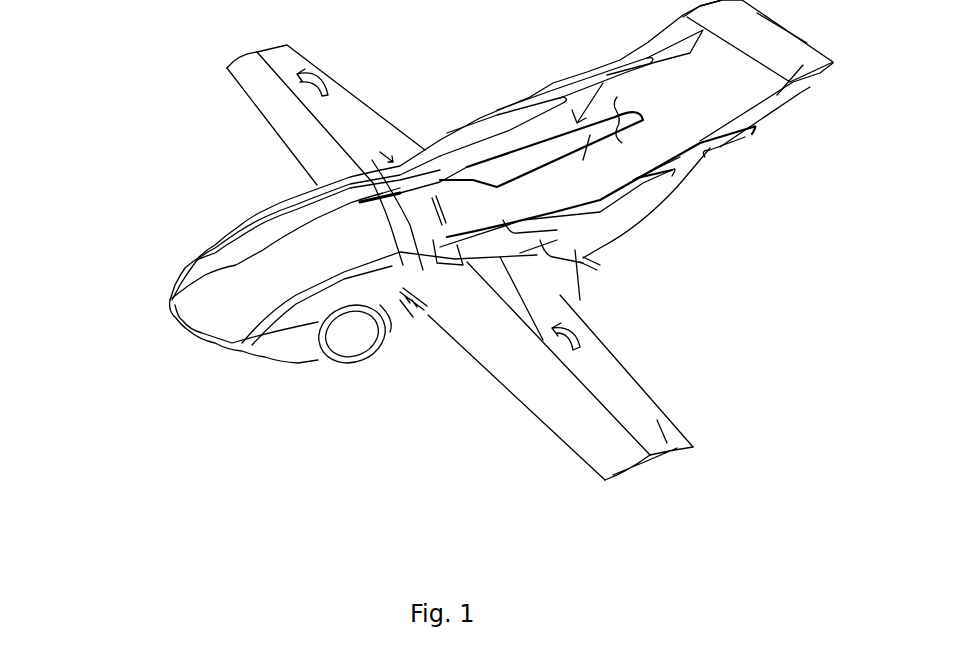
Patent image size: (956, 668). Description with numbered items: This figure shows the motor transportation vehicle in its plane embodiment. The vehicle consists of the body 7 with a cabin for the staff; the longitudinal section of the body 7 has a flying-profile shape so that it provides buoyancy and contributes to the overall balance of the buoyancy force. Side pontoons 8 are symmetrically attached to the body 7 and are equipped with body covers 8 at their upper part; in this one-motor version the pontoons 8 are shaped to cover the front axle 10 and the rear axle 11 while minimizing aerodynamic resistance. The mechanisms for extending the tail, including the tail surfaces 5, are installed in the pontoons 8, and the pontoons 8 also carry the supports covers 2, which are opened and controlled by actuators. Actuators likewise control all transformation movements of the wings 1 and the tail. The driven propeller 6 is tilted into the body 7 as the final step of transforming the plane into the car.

The wings 1 is at (248, 70).
The supports covers 2 is at (423, 210).
The tail surfaces 5 is at (803, 58).
The driven propeller 6 is at (617, 100).
The body 7 is at (227, 300).
The side pontoons 8 is at (289, 333).
The front axle 10 is at (348, 333).
The rear axle 11 is at (590, 135).